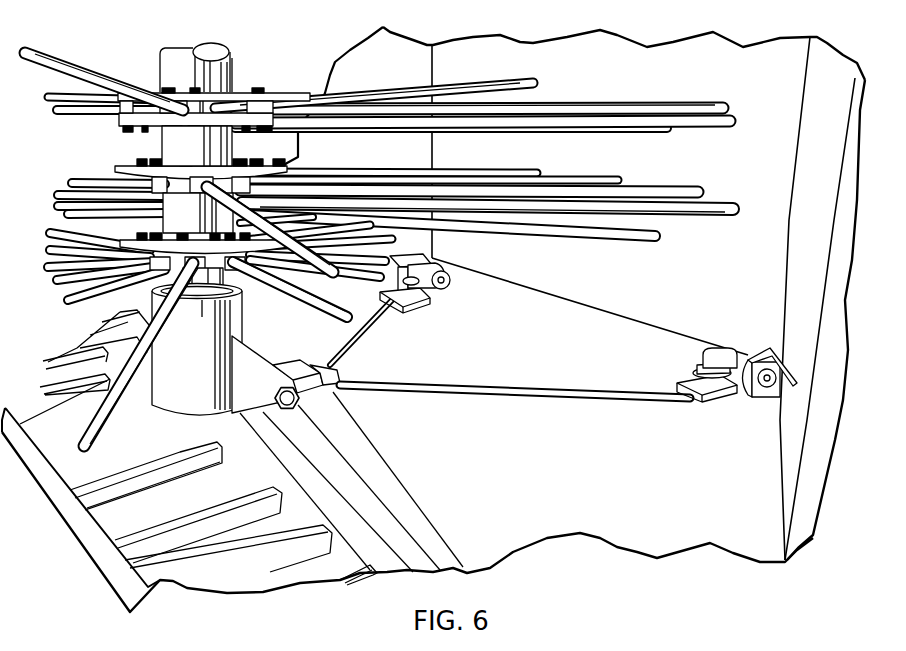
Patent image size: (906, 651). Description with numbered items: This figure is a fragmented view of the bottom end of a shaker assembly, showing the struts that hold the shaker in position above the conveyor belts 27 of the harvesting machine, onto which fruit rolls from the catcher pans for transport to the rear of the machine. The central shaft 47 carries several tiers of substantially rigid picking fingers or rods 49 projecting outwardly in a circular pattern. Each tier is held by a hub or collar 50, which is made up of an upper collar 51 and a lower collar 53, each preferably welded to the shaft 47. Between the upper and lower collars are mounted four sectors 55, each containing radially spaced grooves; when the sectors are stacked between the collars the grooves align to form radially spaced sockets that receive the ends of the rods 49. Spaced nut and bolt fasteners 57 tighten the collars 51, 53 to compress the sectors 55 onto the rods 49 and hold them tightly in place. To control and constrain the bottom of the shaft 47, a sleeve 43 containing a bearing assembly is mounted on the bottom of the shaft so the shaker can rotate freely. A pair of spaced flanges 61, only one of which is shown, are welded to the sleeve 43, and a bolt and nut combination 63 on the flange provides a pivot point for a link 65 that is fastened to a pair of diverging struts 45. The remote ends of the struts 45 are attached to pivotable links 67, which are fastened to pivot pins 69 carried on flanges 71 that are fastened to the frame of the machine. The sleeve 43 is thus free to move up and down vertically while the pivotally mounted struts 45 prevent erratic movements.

The conveyor belts 27 is at (178, 511).
The sleeve 43 is at (245, 315).
The struts 45 is at (381, 331).
The shaft 47 is at (160, 65).
The rods 49 is at (380, 93).
The hubs 50 is at (275, 100).
The upper collar 51 is at (247, 90).
The lower collar 53 is at (119, 125).
The sectors 55 is at (162, 115).
The nut and bolt fasteners 57 is at (202, 94).
The flanges 61 is at (262, 365).
The bolt and nut combination 63 is at (296, 405).
The link 65 is at (327, 395).
The pivotable links 67 is at (433, 265).
The pivot pins 69 is at (450, 286).
The flanges 71 is at (400, 254).